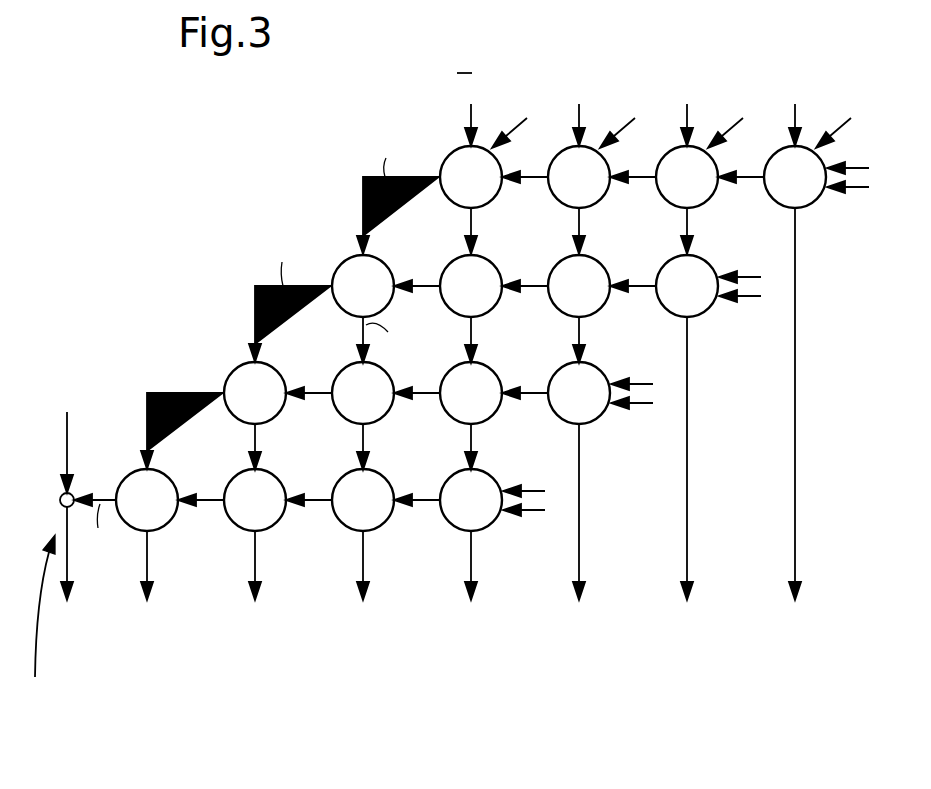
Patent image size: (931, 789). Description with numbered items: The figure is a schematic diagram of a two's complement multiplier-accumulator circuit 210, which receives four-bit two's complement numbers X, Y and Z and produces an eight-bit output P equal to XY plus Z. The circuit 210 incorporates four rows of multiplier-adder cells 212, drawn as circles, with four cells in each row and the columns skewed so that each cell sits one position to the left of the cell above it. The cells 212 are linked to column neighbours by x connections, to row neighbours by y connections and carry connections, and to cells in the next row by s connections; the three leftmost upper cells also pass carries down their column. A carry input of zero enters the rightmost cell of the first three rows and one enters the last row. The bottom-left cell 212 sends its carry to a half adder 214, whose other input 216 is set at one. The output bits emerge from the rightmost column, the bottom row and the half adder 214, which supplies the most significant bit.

The multiplier-accumulator circuit 210 is at (250, 218).
The multiplier-adder cell 212 is at (226, 372).
The half adder 214 is at (72, 492).
The input 216 is at (68, 447).